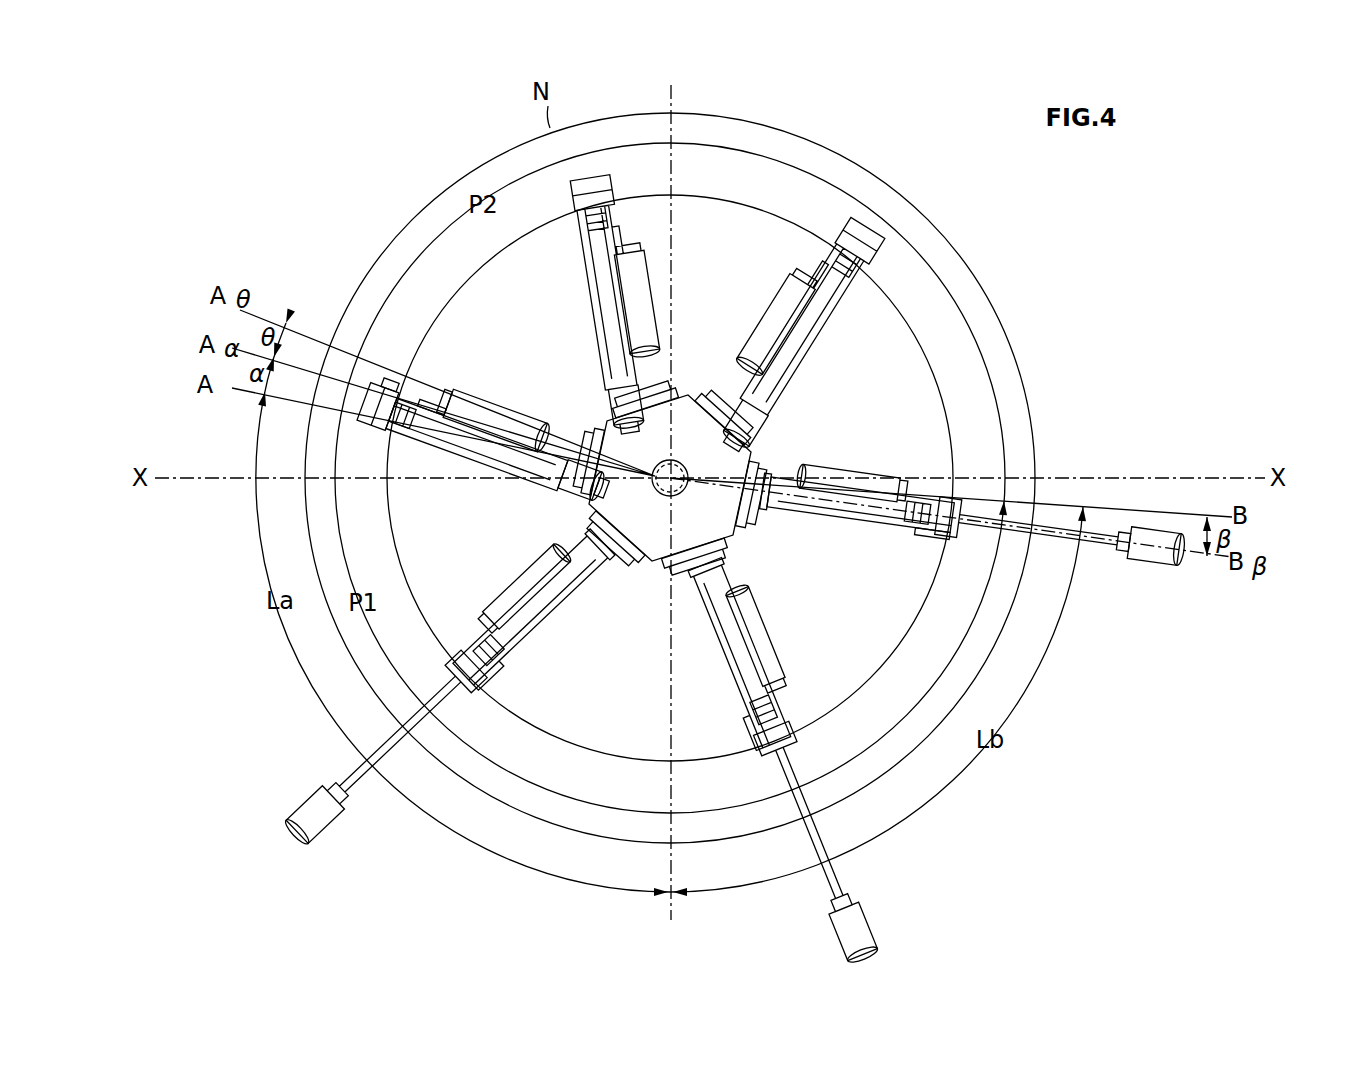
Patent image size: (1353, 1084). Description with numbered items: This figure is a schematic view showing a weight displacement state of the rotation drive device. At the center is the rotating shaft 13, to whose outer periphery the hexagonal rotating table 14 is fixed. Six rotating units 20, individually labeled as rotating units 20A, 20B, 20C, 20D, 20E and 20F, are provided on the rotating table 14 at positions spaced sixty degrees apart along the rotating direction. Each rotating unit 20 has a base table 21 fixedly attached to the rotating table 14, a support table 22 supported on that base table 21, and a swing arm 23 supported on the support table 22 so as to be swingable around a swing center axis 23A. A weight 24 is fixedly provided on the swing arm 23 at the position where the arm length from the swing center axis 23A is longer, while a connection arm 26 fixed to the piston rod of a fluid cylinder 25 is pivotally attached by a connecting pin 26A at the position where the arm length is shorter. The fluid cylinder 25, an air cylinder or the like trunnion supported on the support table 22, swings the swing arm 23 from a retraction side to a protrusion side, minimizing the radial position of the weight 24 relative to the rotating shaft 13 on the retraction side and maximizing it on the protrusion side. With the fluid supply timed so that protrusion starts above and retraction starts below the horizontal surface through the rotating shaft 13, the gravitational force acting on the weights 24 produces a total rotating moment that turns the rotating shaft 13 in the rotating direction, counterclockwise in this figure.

The rotating shaft 13 is at (678, 466).
The rotating table 14 is at (652, 563).
The rotating units 20 is at (470, 383).
The rotating unit 20A is at (504, 407).
The rotating unit 20B is at (459, 681).
The rotating unit 20C is at (777, 752).
The rotating unit 20D is at (946, 473).
The rotating unit 20E is at (784, 332).
The rotating unit 20F is at (655, 303).
The base table 21 is at (600, 428).
The support table 22 is at (523, 470).
The swing arm 23 is at (380, 428).
The swing center axis 23A is at (418, 450).
The weight 24 is at (573, 488).
The fluid cylinder 25 is at (554, 424).
The connection arm 26 is at (383, 390).
The connecting pin 26A is at (351, 334).